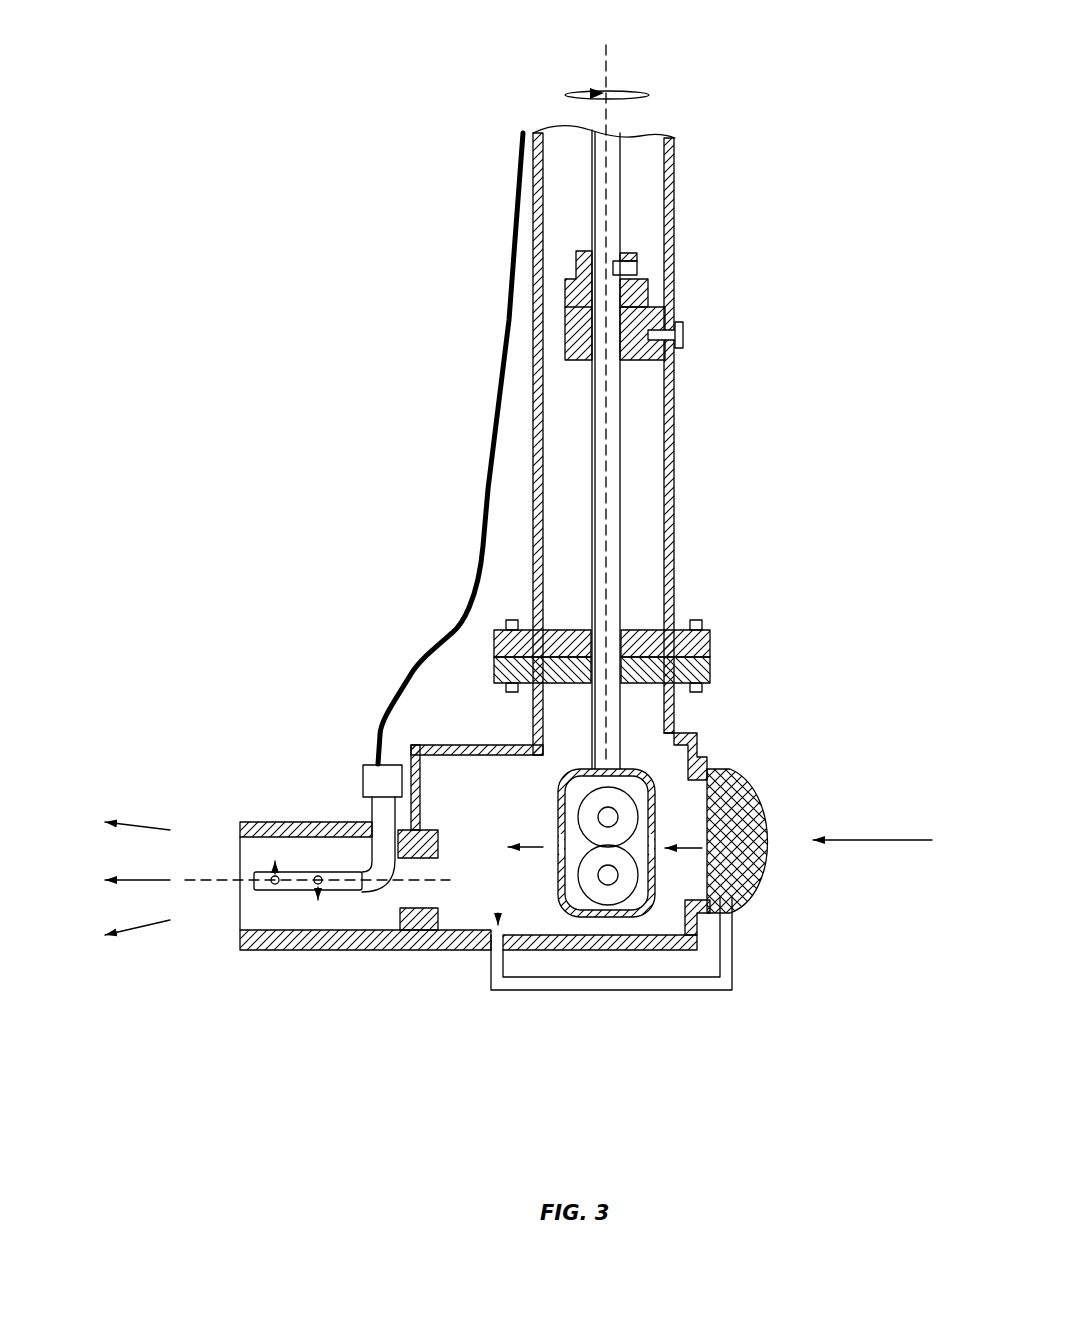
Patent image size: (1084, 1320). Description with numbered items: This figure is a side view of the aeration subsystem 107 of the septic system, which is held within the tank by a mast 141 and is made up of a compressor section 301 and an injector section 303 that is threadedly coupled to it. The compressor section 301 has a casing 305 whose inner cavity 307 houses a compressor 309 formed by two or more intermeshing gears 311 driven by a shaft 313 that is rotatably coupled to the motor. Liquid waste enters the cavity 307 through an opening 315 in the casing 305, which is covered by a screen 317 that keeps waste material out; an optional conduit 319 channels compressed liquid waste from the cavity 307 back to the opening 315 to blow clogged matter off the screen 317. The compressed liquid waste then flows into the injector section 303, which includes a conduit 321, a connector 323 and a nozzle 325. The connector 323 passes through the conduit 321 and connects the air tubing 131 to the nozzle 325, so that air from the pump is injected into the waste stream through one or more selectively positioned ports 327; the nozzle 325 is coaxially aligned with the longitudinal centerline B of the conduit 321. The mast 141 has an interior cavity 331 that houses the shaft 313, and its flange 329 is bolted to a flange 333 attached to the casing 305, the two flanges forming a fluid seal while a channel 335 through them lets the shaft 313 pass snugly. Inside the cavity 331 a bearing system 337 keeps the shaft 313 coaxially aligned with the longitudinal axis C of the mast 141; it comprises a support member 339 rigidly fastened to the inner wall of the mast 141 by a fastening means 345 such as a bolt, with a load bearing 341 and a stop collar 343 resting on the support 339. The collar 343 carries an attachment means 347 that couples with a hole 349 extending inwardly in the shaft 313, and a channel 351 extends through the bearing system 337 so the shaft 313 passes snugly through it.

The aeration subsystem 107 is at (303, 598).
The tubing 131 is at (488, 494).
The mast 141 is at (534, 325).
The compressor section 301 is at (732, 1038).
The injector section 303 is at (268, 1028).
The casing 305 is at (680, 733).
The inner cavity 307 is at (479, 762).
The compressor 309 is at (538, 823).
The intermeshing gears 311 is at (577, 805).
The shaft 313 is at (620, 535).
The opening 315 is at (700, 825).
The screen 317 is at (760, 820).
The conduit 319 is at (620, 992).
The conduit 321 is at (310, 950).
The connector 323 is at (363, 775).
The nozzle 325 is at (328, 872).
The ports 327 is at (323, 883).
The flange 329 is at (712, 632).
The interior cavity 331 is at (650, 556).
The flange 333 is at (656, 623).
The channel 335 is at (632, 632).
The bearing system 337 is at (712, 317).
The support member 339 is at (655, 362).
The load bearing 341 is at (650, 300).
The stop collar 343 is at (638, 258).
The fastening means 345 is at (684, 335).
The attachment means 347 is at (638, 268).
The hole 349 is at (625, 254).
The channel 351 is at (668, 400).
The longitudinal centerline B is at (225, 880).
The longitudinal axis C is at (607, 73).